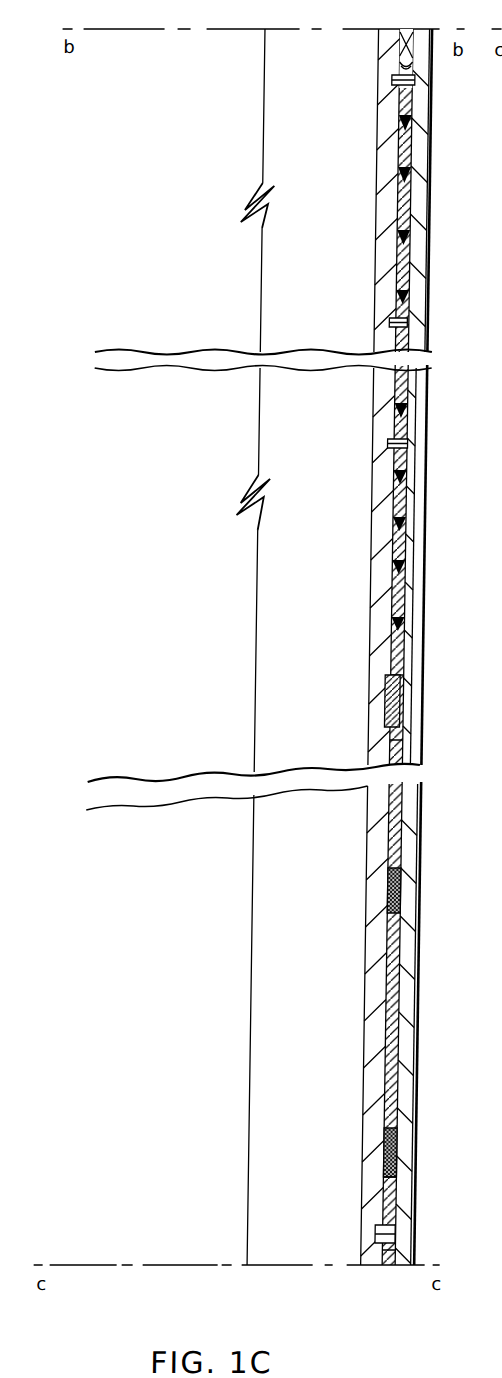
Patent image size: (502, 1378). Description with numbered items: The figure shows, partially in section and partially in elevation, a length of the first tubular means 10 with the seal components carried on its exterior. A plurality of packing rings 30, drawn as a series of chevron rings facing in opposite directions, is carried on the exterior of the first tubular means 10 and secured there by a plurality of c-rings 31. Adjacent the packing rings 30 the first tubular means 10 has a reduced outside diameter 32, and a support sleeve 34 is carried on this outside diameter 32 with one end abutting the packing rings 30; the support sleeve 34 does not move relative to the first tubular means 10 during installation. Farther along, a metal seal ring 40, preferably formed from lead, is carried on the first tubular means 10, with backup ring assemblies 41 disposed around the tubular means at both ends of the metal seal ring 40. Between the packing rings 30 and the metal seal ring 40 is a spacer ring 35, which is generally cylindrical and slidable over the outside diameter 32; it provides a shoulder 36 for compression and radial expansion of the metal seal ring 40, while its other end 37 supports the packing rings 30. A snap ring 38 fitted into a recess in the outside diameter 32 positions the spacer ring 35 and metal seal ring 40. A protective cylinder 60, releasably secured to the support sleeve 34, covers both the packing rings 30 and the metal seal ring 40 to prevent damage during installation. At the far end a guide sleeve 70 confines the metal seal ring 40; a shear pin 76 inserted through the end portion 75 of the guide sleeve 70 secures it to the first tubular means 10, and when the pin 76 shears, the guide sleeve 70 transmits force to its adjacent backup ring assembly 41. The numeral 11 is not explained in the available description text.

The first tubular means 10 is at (388, 1080).
The annular passage 11 is at (308, 540).
The packing rings 30 is at (413, 213).
The c-rings 31 is at (393, 83).
The outside diameter 32 is at (401, 128).
The support sleeve 34 is at (401, 56).
The spacer ring 35 is at (413, 750).
The shoulder 36 is at (401, 887).
The other end 37 is at (412, 677).
The snap ring 38 is at (395, 700).
The metal seal ring 40 is at (406, 990).
The backup ring assemblies 41 is at (424, 881).
The protective cylinder 60 is at (425, 478).
The guide sleeve 70 is at (410, 1258).
The end portion 75 is at (407, 1195).
The shear pin 76 is at (393, 1230).